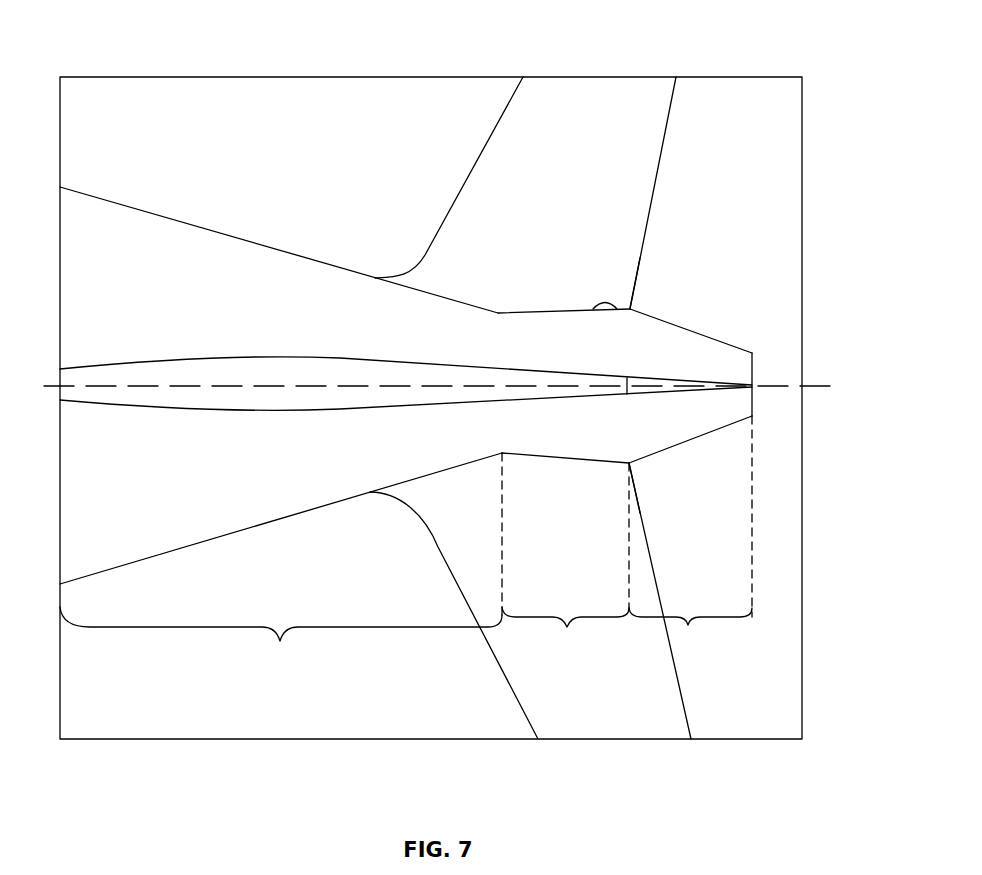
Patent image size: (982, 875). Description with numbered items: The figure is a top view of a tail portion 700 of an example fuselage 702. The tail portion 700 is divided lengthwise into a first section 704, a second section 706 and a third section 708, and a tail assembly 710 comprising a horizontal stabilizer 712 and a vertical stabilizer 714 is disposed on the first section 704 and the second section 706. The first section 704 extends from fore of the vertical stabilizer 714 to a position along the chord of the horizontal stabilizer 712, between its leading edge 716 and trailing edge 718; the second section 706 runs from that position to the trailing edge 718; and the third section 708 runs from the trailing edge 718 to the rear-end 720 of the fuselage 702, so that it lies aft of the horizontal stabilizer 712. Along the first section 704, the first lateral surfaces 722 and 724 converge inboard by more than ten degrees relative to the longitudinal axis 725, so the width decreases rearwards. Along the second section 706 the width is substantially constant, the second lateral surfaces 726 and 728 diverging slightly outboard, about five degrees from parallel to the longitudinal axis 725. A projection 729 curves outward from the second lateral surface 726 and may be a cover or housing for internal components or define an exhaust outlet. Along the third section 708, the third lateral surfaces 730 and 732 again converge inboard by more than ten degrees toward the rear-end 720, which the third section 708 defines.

The tail portion 700 is at (158, 100).
The fuselage 702 is at (134, 254).
The first section 704 is at (280, 641).
The second section 706 is at (567, 627).
The third section 708 is at (688, 625).
The tail assembly 710 is at (458, 178).
The horizontal stabilizer 712 is at (640, 178).
The vertical stabilizer 714 is at (258, 358).
The leading edge 716 is at (442, 222).
The trailing edge 718 is at (640, 270).
The rear-end 720 is at (754, 366).
The first lateral surface 722 is at (190, 223).
The first lateral surface 724 is at (268, 524).
The longitudinal axis 725 is at (99, 388).
The second lateral surface 726 is at (580, 311).
The second lateral surface 728 is at (600, 456).
The projection 729 is at (605, 300).
The third lateral surface 730 is at (734, 344).
The third lateral surface 732 is at (706, 438).